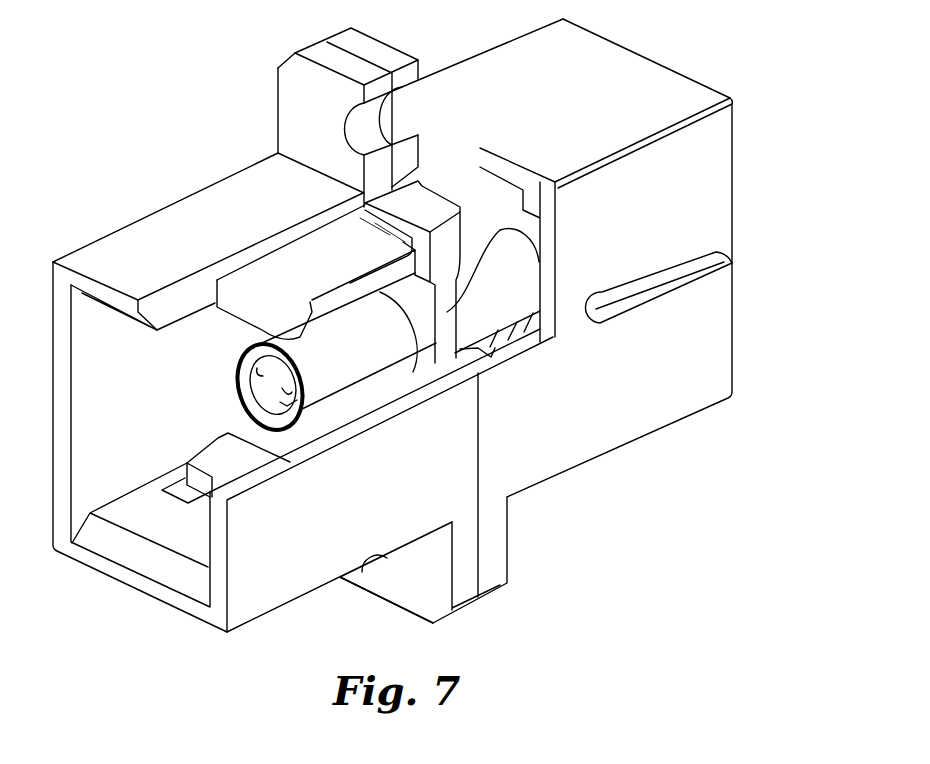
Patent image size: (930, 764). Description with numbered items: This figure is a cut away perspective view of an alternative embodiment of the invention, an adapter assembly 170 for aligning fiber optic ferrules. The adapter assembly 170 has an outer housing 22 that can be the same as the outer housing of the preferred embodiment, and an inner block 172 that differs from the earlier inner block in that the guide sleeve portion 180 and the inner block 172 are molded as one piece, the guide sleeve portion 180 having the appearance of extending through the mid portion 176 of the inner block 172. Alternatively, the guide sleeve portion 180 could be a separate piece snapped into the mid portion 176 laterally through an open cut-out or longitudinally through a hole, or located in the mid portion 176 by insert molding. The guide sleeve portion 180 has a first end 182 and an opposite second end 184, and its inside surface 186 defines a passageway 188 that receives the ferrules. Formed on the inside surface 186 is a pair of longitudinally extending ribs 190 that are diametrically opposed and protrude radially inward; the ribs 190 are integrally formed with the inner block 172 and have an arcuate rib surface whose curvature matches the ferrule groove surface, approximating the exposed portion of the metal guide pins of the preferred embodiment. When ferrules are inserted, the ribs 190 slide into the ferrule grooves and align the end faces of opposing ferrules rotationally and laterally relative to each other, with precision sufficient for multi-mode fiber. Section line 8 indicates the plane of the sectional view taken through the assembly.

The outer housing 22 is at (645, 413).
The adapter assembly 170 is at (513, 513).
The inner block 172 is at (320, 275).
The mid portion 176 is at (448, 312).
The guide sleeve portion 180 is at (276, 391).
The first end 182 is at (308, 415).
The second end 184 is at (520, 270).
The inside surface 186 is at (263, 373).
The passageway 188 is at (272, 382).
The ribs 190 is at (290, 403).
The section line 8 is at (547, 279).